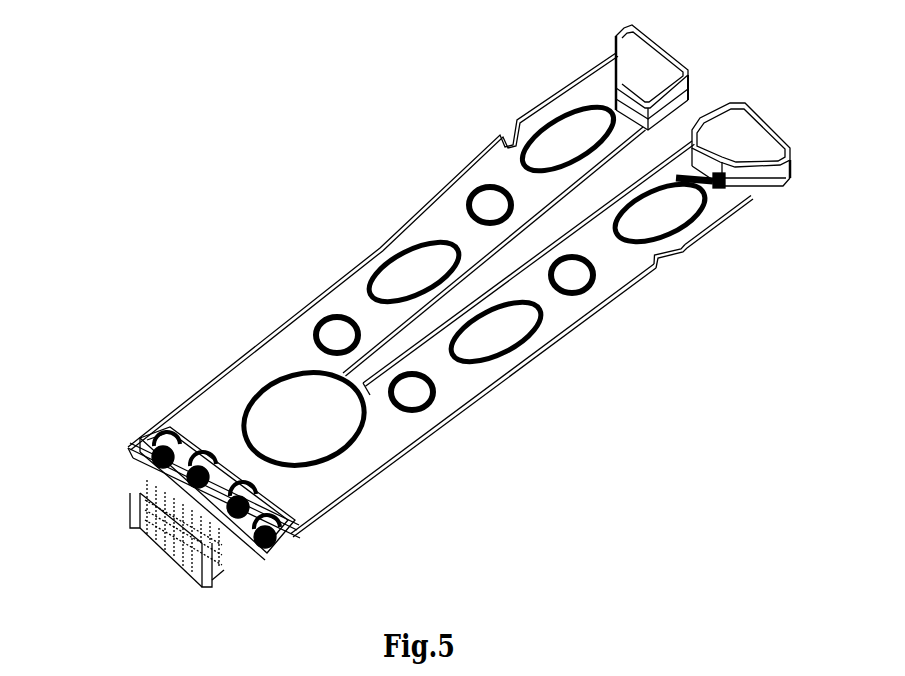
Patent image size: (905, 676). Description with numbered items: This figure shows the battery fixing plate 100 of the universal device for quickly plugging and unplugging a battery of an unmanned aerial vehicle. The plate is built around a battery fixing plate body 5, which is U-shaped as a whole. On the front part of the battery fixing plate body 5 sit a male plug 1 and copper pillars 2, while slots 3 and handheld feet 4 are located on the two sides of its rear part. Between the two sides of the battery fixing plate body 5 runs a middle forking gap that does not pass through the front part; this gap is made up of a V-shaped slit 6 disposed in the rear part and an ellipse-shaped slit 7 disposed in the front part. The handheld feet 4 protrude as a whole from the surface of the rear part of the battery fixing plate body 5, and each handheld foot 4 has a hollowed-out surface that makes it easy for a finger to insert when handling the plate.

The battery fixing plate 100 is at (190, 395).
The male plug 1 is at (153, 513).
The copper pillars 2 is at (250, 503).
The slots 3 is at (672, 258).
The handheld feet 4 is at (763, 177).
The battery fixing plate body 5 is at (288, 347).
The V-shaped slit 6 is at (512, 257).
The ellipse-shaped slit 7 is at (317, 413).